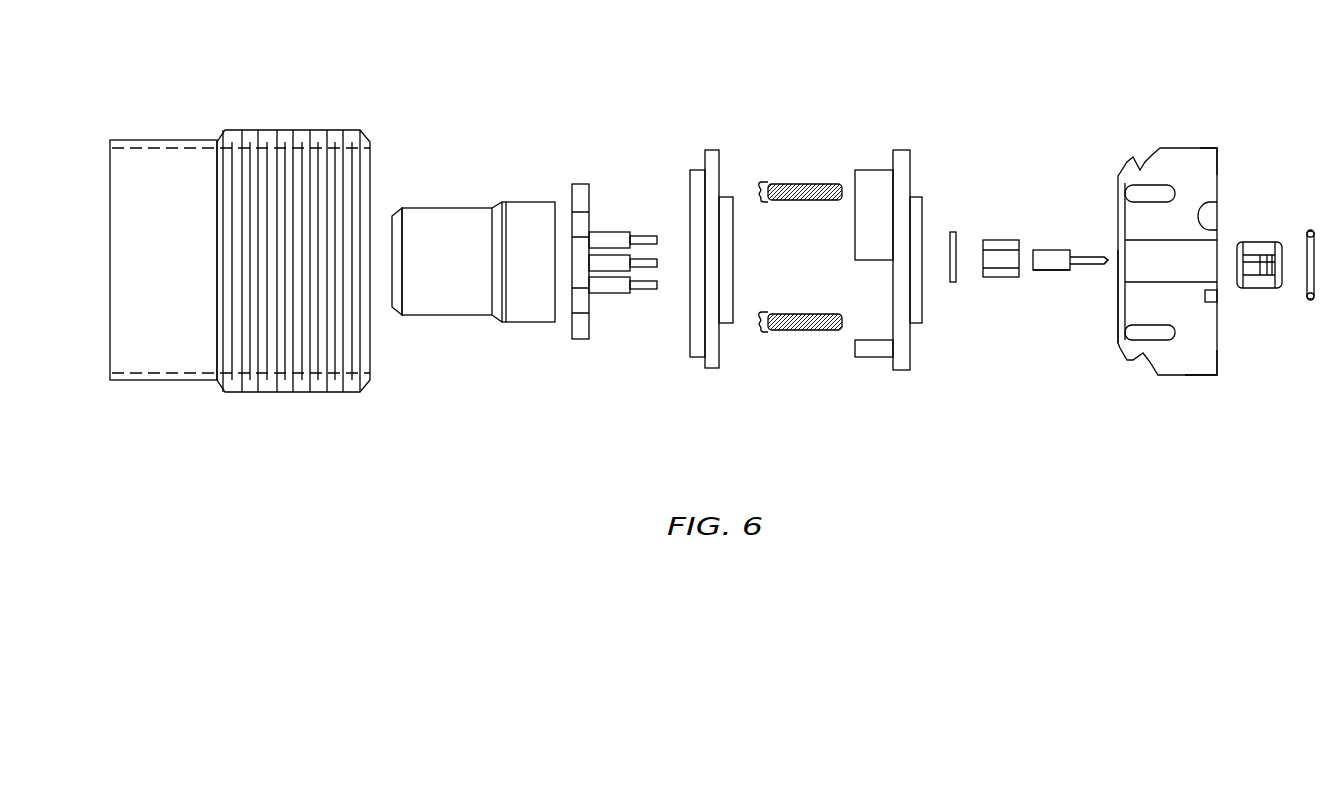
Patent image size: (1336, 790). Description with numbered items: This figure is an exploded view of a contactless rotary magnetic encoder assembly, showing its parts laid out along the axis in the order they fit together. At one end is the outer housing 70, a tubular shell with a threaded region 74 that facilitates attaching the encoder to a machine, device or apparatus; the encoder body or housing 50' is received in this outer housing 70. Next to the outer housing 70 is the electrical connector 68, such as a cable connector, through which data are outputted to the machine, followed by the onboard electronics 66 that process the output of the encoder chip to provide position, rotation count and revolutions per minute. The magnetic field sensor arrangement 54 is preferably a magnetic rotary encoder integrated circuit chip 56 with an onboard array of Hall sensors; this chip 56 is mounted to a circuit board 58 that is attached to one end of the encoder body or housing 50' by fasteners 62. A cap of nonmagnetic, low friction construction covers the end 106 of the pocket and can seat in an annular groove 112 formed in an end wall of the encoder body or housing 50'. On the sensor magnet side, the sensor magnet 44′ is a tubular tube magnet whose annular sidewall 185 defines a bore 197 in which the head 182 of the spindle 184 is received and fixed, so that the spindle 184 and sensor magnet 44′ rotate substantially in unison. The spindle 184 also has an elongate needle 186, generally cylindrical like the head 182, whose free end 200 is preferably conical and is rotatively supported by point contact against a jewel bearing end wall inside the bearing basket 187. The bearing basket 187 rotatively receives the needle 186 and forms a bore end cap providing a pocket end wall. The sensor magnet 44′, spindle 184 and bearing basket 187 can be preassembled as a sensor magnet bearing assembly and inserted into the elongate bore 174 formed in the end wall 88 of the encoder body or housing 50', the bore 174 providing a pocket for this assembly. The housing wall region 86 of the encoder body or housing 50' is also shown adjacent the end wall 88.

The outer housing 70 is at (145, 123).
The threaded region 74 is at (327, 120).
The electrical connector 68 is at (475, 198).
The electronics 66 is at (712, 142).
The fasteners 62 is at (800, 203).
The circuit board 58 is at (904, 149).
The magnetic field sensor arrangement 54 is at (930, 193).
The magnetic rotary encoder integrated circuit chip 56 is at (920, 303).
The end of the pocket 106 is at (958, 228).
The sensor magnet 44′ is at (1005, 237).
The bore 197 is at (988, 258).
The annular sidewall 185 is at (1002, 277).
The spindle 184 is at (1055, 232).
The head 182 is at (1053, 270).
The needle 186 is at (1088, 266).
The free end 200 is at (1106, 262).
The housing 50' is at (1167, 202).
The housing top wall 86 is at (1218, 175).
The bore 174 is at (1217, 278).
The end wall 88 is at (1217, 358).
The annular groove 112 is at (1120, 287).
The bearing basket 187 is at (1267, 230).